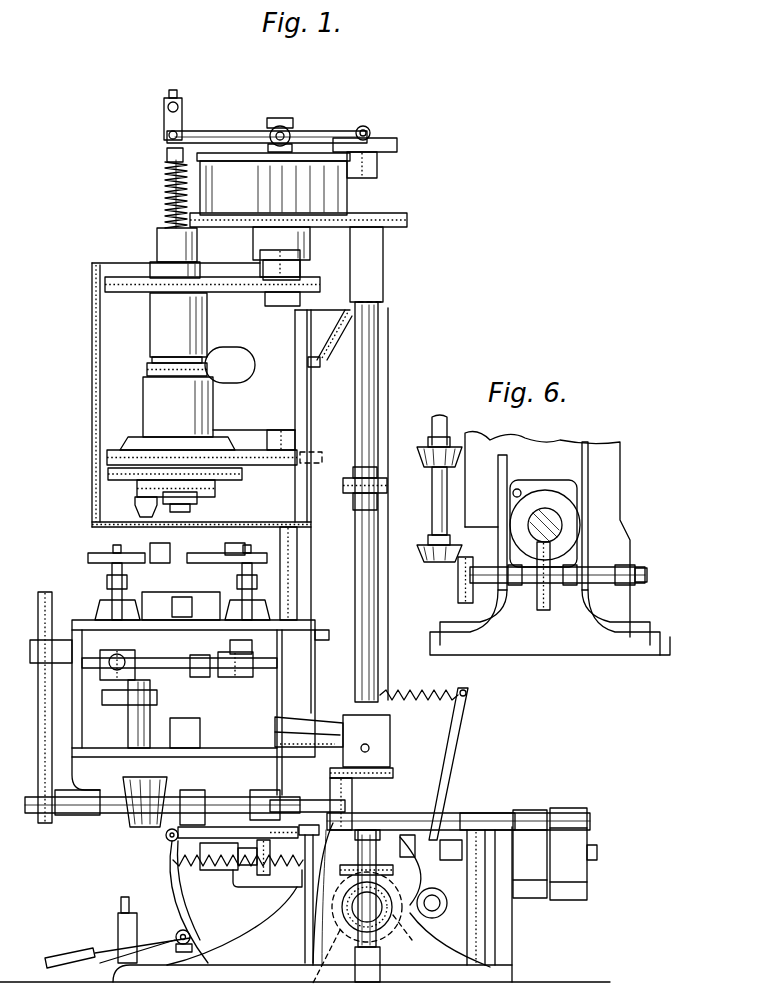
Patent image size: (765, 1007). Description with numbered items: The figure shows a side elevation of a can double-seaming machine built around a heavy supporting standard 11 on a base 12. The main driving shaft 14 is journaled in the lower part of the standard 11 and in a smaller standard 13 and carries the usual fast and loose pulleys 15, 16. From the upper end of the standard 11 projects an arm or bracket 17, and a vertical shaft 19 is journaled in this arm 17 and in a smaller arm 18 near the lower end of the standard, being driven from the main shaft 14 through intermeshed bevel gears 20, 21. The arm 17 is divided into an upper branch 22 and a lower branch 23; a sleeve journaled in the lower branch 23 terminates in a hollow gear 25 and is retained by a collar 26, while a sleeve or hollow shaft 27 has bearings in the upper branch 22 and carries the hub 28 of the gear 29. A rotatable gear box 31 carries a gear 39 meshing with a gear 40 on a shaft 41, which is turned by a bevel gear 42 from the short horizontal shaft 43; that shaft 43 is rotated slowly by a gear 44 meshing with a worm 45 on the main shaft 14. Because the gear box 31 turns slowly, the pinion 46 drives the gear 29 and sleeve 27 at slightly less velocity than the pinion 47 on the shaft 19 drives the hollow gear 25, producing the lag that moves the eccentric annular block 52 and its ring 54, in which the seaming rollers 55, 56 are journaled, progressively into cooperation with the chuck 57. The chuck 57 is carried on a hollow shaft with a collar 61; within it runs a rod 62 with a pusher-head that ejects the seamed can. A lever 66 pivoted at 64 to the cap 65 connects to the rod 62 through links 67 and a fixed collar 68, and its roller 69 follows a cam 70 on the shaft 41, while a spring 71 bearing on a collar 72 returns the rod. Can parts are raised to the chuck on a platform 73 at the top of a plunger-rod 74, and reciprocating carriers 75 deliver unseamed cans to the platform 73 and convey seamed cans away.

In FIG. 1, the supporting standard 11 is at (345, 662).
In FIG. 6, the supporting standard 11 is at (535, 462).
In FIG. 1, the base 12 is at (277, 953).
In FIG. 1, the smaller standard 13 is at (500, 925).
In FIG. 1, the main driving shaft 14 is at (597, 852).
In FIG. 6, the main driving shaft 14 is at (562, 525).
In FIG. 1, the fast pulley 15 is at (533, 810).
In FIG. 1, the loose pulley 16 is at (565, 822).
In FIG. 1, the arm or bracket 17 is at (270, 332).
In FIG. 1, the smaller arm 18 is at (278, 822).
In FIG. 1, the vertical shaft 19 is at (292, 578).
In FIG. 1, the bevel gear 20 is at (268, 875).
In FIG. 1, the bevel gear 21 is at (307, 850).
In FIG. 1, the upper branch 22 is at (166, 322).
In FIG. 1, the lower branch 23 is at (162, 402).
In FIG. 1, the hollow gear 25 is at (115, 452).
In FIG. 1, the collar 26 is at (150, 370).
In FIG. 1, the sleeve or hollow shaft 27 is at (160, 362).
In FIG. 1, the hub 28 is at (162, 270).
In FIG. 1, the gear 29 is at (105, 283).
In FIG. 1, the gear box or casing 31 is at (310, 193).
In FIG. 1, the gear 39 is at (264, 253).
In FIG. 1, the gear 40 is at (392, 226).
In FIG. 1, the shaft 41 is at (368, 335).
In FIG. 6, the shaft 41 is at (448, 427).
In FIG. 1, the bevel gear 42 is at (345, 868).
In FIG. 6, the bevel gear 42 is at (458, 570).
In FIG. 1, the short horizontal shaft 43 is at (432, 918).
In FIG. 6, the short horizontal shaft 43 is at (527, 585).
In FIG. 1, the gear 44 is at (345, 905).
In FIG. 6, the gear 44 is at (548, 608).
In FIG. 1, the worm 45 is at (393, 838).
In FIG. 6, the worm 45 is at (556, 512).
In FIG. 1, the pinion 46 is at (295, 280).
In FIG. 1, the pinion 47 is at (264, 448).
In FIG. 1, the annular block 52 is at (110, 474).
In FIG. 1, the ring 54 is at (140, 488).
In FIG. 1, the second operation seaming roller 55 is at (137, 507).
In FIG. 1, the first operation seaming roller 56 is at (168, 512).
In FIG. 1, the chuck 57 is at (182, 504).
In FIG. 1, the collar 61 is at (170, 240).
In FIG. 1, the rod 62 is at (166, 180).
In FIG. 1, the pivot 64 is at (292, 130).
In FIG. 1, the cap 65 is at (290, 120).
In FIG. 1, the lever 66 is at (218, 133).
In FIG. 1, the links 67 is at (166, 120).
In FIG. 1, the fixed collar 68 is at (195, 83).
In FIG. 1, the roller 69 is at (370, 128).
In FIG. 1, the cam 70 is at (397, 144).
In FIG. 1, the spring 71 is at (168, 195).
In FIG. 1, the collar 72 is at (166, 156).
In FIG. 1, the platform 73 is at (185, 594).
In FIG. 1, the plunger-rod 74 is at (185, 648).
In FIG. 1, the reciprocating carriers 75 is at (202, 545).